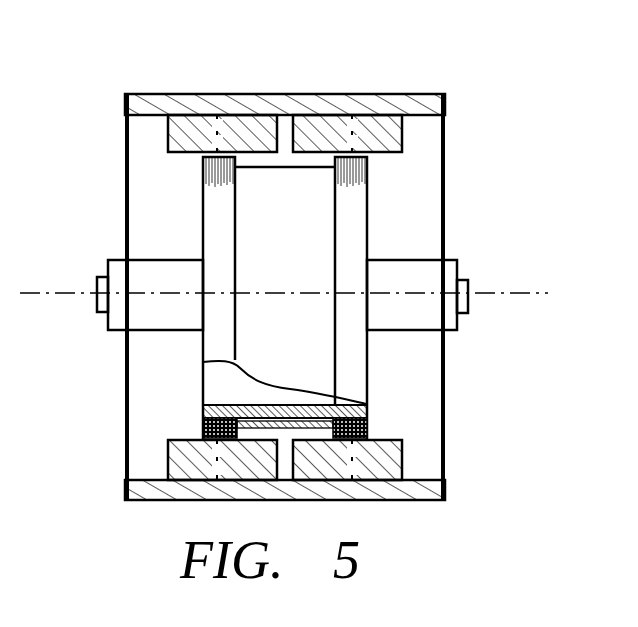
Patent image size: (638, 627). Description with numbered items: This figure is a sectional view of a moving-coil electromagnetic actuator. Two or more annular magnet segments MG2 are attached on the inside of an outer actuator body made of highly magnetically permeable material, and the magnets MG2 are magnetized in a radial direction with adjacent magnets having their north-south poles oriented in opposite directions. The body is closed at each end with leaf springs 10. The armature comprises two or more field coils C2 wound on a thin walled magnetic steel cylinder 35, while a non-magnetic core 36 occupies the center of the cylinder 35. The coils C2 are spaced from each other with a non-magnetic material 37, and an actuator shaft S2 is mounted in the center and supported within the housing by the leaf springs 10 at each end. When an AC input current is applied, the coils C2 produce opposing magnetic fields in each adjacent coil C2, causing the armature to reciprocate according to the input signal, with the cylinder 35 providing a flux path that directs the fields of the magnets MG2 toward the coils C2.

The leaf springs 10 is at (126, 172).
The annular magnet segments MG2 is at (350, 116).
The actuator shaft S2 is at (170, 265).
The non-magnetic material 37 is at (304, 278).
The non-magnetic core 36 is at (210, 386).
The thin walled magnetic steel cylinder 35 is at (203, 412).
The field coils C2 is at (203, 428).